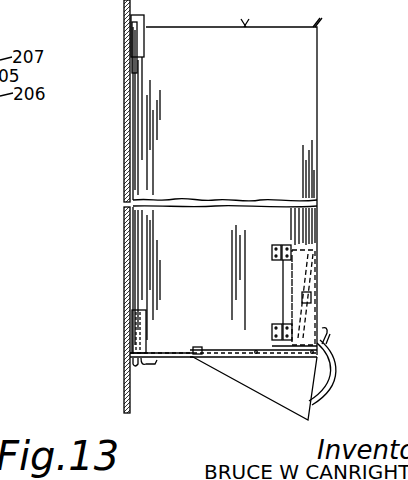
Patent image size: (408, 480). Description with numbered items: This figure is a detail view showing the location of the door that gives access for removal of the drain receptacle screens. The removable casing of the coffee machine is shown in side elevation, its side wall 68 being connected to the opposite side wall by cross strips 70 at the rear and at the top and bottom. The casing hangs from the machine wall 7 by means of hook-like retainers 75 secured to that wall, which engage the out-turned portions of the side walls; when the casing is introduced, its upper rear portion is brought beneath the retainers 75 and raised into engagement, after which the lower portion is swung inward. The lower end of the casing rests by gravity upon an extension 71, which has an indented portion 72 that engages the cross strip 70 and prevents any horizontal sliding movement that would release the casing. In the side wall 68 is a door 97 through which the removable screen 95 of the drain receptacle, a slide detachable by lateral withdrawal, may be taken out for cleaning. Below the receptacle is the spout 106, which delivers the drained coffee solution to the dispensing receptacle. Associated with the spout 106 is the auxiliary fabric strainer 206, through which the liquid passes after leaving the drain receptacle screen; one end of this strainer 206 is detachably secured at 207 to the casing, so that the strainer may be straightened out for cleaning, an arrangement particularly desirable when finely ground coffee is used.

The wall 7 is at (124, 165).
The side wall 68 is at (289, 124).
The cross strip 70 is at (133, 67).
The extension 71 is at (149, 366).
The indented portion 72 is at (134, 364).
The retainer 75 is at (144, 42).
The removable screen 95 is at (308, 277).
The door 97 is at (312, 313).
The spout 106 is at (287, 400).
The fabric strainer 206 is at (338, 378).
The detachable securing point 207 is at (329, 337).